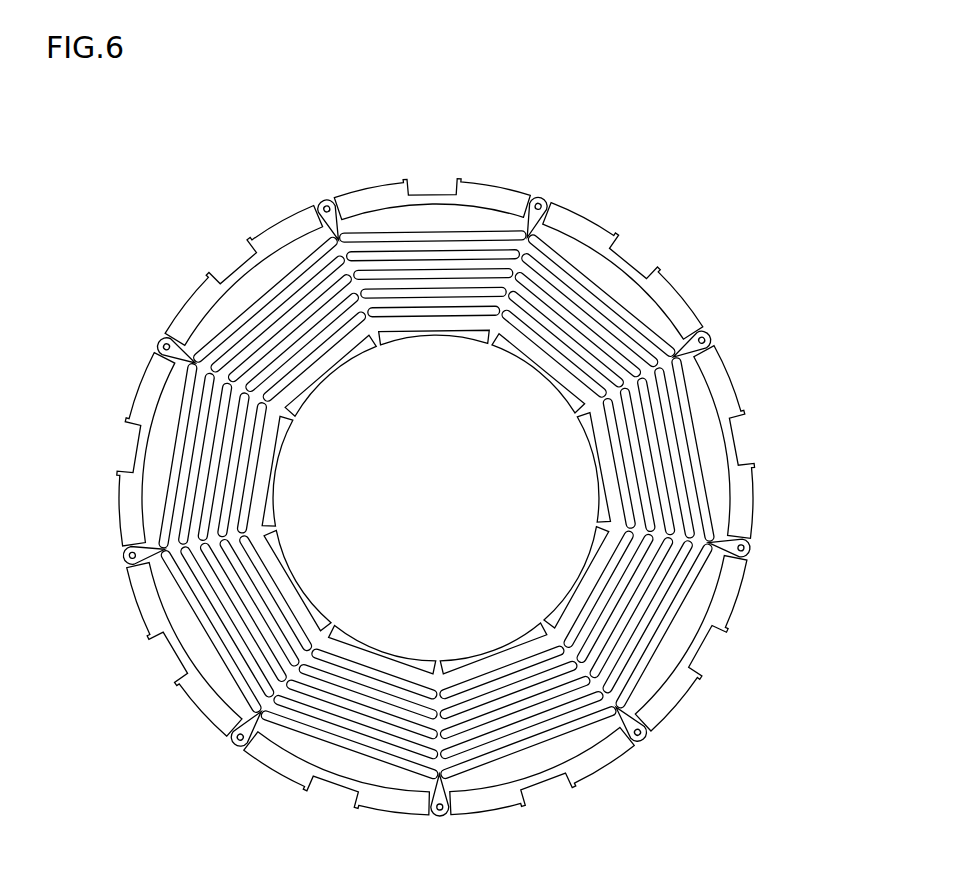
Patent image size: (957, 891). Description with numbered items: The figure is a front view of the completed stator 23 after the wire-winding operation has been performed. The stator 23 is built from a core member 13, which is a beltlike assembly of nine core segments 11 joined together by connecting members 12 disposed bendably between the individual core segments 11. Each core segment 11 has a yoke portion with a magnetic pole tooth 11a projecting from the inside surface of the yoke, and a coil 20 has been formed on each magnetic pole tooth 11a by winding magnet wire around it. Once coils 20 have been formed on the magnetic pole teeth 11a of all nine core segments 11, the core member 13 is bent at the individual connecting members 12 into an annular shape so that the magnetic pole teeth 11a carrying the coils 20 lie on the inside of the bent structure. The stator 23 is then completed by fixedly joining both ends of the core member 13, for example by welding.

The core member 13 is at (786, 170).
The core segment 11 is at (662, 287).
The magnetic pole tooth 11a is at (540, 373).
The connecting member 12 is at (548, 198).
The coil 20 is at (640, 338).
The stator 23 is at (194, 299).